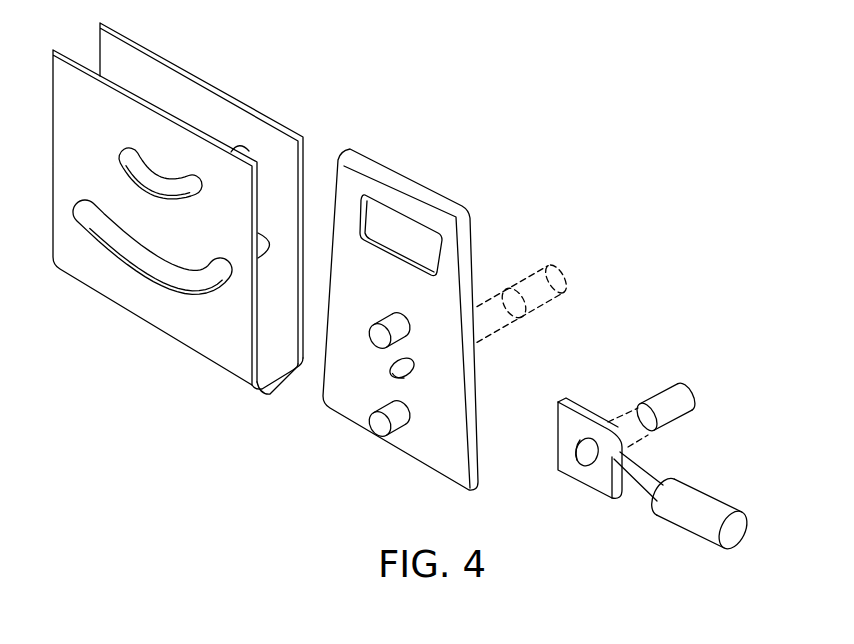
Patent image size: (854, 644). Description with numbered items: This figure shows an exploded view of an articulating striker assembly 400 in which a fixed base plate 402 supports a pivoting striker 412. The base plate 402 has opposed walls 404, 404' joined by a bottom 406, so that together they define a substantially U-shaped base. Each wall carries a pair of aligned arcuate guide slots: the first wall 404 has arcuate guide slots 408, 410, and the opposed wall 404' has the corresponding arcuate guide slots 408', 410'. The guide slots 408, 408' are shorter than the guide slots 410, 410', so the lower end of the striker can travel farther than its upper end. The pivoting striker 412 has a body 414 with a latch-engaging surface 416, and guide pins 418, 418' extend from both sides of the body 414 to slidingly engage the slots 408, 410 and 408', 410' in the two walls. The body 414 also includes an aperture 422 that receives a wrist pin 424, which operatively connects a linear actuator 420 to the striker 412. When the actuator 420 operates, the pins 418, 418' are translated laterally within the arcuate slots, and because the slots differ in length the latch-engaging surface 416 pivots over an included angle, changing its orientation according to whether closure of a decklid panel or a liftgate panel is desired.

The articulating striker assembly 400 is at (573, 132).
The fixed base plate 402 is at (196, 364).
The wall 404 is at (153, 217).
The wall 404' is at (214, 193).
The bottom 406 is at (281, 384).
The arcuate guide slot 408 is at (130, 168).
The arcuate guide slot 408' is at (280, 122).
The arcuate guide slot 410 is at (141, 271).
The arcuate guide slot 410' is at (230, 282).
The pivoting striker 412 is at (503, 369).
The body 414 is at (458, 397).
The latch-engaging surface 416 is at (405, 175).
The guide pin 418 is at (379, 311).
The guide pin 418' is at (386, 449).
The linear actuator 420 is at (698, 493).
The aperture 422 is at (412, 362).
The wrist pin 424 is at (561, 256).